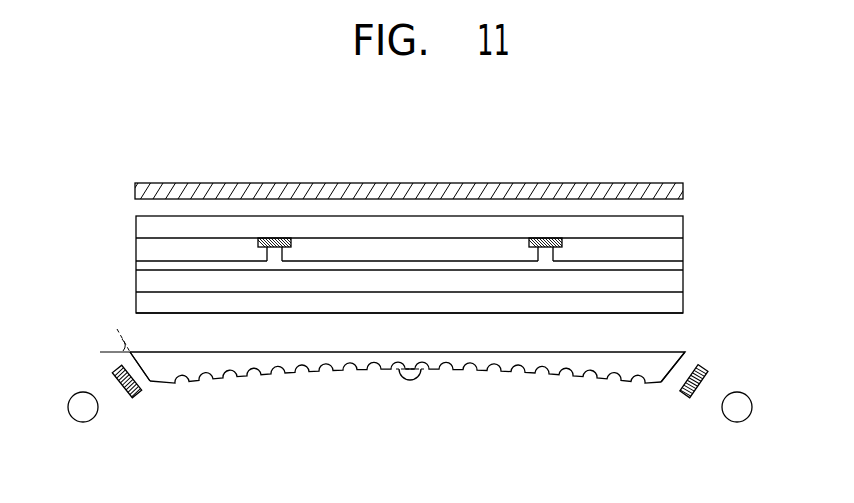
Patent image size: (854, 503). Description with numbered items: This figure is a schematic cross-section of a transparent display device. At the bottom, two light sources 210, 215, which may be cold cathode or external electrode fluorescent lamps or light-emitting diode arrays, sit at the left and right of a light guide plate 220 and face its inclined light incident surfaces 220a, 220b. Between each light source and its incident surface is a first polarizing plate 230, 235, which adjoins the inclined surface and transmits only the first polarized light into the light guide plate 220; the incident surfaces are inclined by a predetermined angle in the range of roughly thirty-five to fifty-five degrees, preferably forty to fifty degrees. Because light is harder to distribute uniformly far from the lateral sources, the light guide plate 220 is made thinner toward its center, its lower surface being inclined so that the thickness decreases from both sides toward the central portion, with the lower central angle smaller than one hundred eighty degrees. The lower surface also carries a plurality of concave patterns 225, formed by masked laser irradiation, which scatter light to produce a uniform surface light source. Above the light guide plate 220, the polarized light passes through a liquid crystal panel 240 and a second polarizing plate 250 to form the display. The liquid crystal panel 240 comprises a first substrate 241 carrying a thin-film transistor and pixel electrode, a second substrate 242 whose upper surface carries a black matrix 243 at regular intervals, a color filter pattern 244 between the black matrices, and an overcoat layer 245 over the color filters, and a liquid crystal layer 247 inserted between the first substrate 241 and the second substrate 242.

The light source 210 is at (83, 422).
The light source 215 is at (737, 422).
The light guide plate 220 is at (243, 365).
The light incident surface 220a is at (150, 381).
The light incident surface 220b is at (661, 382).
The concave patterns 225 is at (327, 362).
The first polarizing plate 230 is at (134, 400).
The first polarizing plate 235 is at (687, 402).
The liquid crystal panel 240 is at (462, 225).
The first substrate 241 is at (683, 306).
The second substrate 242 is at (683, 219).
The black matrix 243 is at (546, 238).
The color filter pattern 244 is at (683, 243).
The overcoat layer 245 is at (683, 266).
The liquid crystal layer 247 is at (683, 286).
The second polarizing plate 250 is at (683, 190).